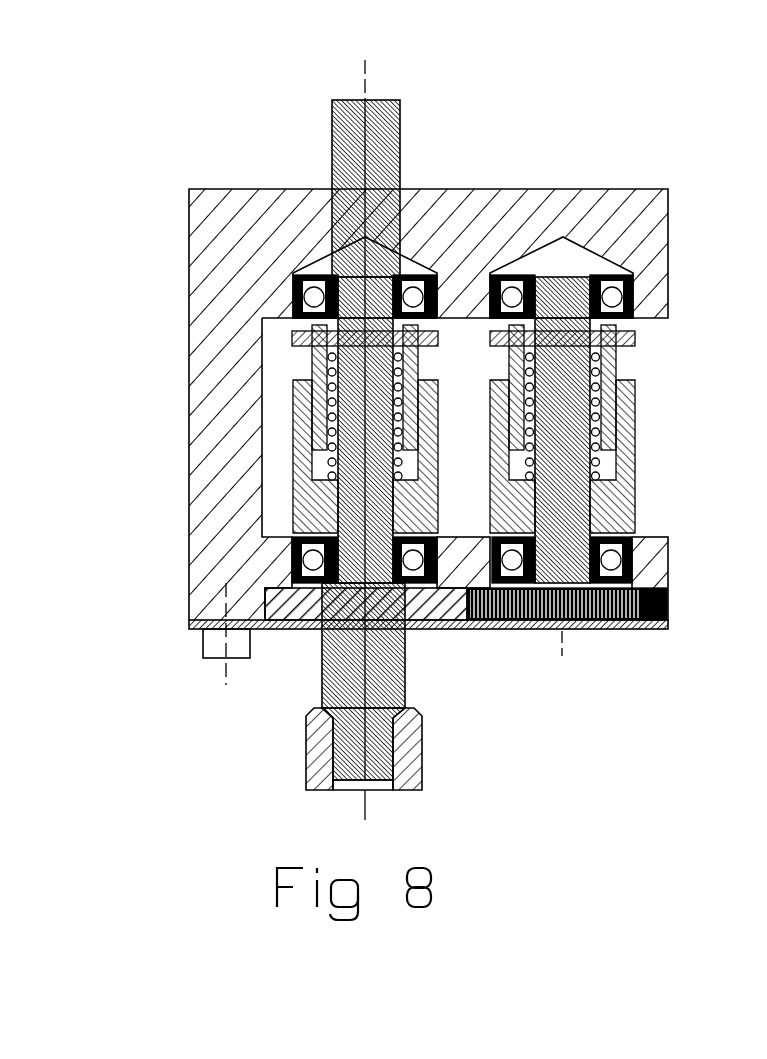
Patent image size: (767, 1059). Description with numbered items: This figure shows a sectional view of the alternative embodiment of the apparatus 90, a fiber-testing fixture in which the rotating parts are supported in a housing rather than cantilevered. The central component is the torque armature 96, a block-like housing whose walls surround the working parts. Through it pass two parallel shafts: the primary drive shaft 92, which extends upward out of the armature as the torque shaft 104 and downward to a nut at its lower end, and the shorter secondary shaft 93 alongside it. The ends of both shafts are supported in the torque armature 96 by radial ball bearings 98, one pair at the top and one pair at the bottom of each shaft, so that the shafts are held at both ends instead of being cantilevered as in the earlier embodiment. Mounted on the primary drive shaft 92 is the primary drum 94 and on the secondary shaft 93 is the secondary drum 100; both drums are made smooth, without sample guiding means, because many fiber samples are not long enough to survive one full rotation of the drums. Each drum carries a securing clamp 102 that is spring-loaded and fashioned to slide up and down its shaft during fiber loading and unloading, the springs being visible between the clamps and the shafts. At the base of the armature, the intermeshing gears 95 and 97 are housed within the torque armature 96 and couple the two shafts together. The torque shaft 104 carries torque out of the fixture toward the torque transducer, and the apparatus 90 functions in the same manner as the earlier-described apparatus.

The apparatus 90 is at (408, 440).
The primary drive shaft 92 is at (407, 672).
The secondary shaft 93 is at (597, 516).
The primary drum 94 is at (288, 475).
The intermeshing gear 95 is at (258, 603).
The torque armature 96 is at (190, 228).
The intermeshing gear 97 is at (630, 620).
The radial ball bearings 98 is at (290, 298).
The secondary drum 100 is at (640, 480).
The securing clamp 102 is at (287, 338).
The torque shaft 104 is at (318, 150).